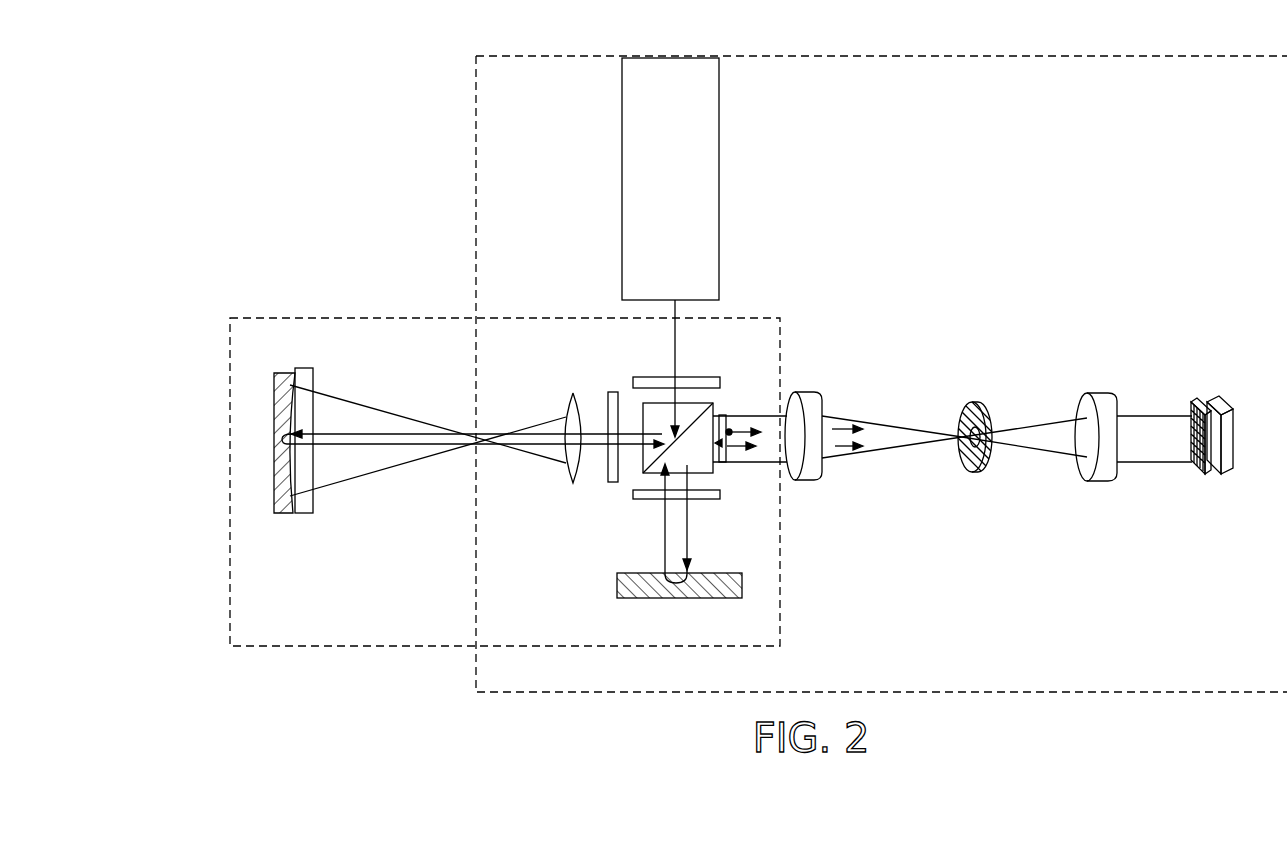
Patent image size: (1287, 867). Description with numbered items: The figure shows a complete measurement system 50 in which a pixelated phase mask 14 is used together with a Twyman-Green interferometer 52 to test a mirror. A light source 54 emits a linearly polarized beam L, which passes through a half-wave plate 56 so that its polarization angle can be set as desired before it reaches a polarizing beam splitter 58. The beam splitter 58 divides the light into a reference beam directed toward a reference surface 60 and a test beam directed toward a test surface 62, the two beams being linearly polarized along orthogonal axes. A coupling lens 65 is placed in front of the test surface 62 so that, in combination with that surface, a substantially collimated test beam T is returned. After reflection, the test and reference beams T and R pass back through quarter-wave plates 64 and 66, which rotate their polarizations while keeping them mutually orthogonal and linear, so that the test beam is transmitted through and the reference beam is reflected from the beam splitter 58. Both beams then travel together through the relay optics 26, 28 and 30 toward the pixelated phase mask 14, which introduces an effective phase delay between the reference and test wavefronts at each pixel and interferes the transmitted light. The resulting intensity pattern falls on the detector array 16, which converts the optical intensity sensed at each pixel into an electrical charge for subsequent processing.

The measurement system 50 is at (1200, 52).
The Twyman-Green interferometer 52 is at (758, 315).
The light source 54 is at (720, 155).
The half-wave plate 56 is at (703, 376).
The polarizing beam splitter 58 is at (643, 473).
The reference surface 60 is at (617, 588).
The test surface 62 is at (281, 373).
The quarter-wave plate 64 is at (707, 500).
The coupling lens 65 is at (569, 393).
The quarter-wave plate 66 is at (611, 392).
The relay optics 26 is at (799, 392).
The relay optics 28 is at (977, 401).
The relay optics 30 is at (1097, 393).
The pixelated phase mask 14 is at (1196, 400).
The detector array 16 is at (1223, 400).
The linearly polarized beam L is at (674, 354).
The reference beam R is at (728, 426).
The test beam T is at (727, 458).